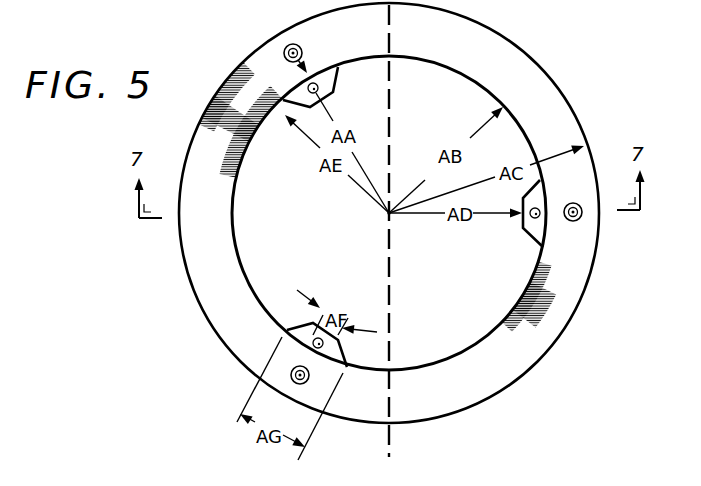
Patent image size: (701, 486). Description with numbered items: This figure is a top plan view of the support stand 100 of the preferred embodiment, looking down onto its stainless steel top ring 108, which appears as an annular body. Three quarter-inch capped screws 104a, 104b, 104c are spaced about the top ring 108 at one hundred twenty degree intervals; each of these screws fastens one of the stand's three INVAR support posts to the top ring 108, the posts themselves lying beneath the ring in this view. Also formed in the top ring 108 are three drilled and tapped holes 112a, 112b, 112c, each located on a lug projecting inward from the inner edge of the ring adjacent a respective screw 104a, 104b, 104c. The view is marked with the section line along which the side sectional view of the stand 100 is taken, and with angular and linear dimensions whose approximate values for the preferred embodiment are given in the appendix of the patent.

The support stand 100 is at (150, 272).
The top ring 108 is at (482, 53).
The capped screw 104a is at (581, 215).
The capped screw 104b is at (288, 44).
The capped screw 104c is at (291, 370).
The drilled and tapped hole 112a is at (533, 220).
The drilled and tapped hole 112b is at (318, 82).
The drilled and tapped hole 112c is at (320, 350).